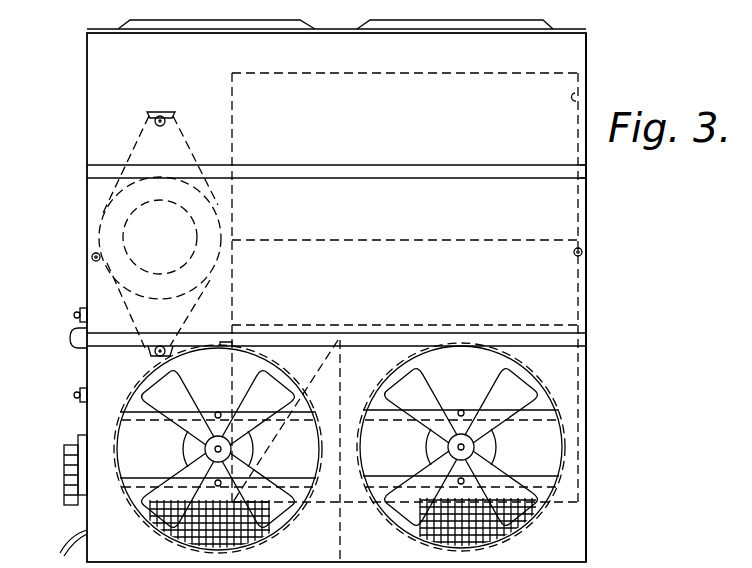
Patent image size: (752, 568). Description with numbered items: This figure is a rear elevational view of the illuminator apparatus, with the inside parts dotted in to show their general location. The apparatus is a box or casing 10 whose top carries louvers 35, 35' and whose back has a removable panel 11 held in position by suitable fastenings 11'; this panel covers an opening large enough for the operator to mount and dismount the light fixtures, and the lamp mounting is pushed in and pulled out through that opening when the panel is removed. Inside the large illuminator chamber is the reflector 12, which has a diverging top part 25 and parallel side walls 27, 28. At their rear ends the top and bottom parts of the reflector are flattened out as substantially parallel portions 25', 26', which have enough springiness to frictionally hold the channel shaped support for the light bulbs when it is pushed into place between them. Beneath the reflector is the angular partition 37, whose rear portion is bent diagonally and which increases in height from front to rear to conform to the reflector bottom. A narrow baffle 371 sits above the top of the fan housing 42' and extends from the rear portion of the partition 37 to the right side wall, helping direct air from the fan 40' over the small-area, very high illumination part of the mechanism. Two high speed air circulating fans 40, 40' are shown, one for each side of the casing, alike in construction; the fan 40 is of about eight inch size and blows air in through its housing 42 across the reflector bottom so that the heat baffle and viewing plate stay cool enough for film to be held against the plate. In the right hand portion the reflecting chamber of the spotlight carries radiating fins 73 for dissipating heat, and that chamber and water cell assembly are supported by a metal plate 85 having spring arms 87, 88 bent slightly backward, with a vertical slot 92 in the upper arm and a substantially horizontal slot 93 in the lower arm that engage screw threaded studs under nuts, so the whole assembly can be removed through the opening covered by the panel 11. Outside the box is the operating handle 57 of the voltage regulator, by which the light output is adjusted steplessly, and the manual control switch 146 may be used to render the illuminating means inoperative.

The box or casing 10 is at (84, 106).
The removable panel 11 is at (607, 297).
The fastenings 11' is at (341, 253).
The reflector 12 is at (586, 96).
The top part of reflector 25 is at (405, 91).
The flattened rear portion of reflector top 25' is at (405, 221).
The flattened rear portion of reflector bottom 26' is at (405, 395).
The side wall of reflector 27 is at (588, 188).
The side wall of reflector 28 is at (234, 211).
The louver 35 is at (488, 31).
The louver 35' is at (309, 33).
The angular partition 37 is at (343, 390).
The narrow baffle 371 is at (230, 344).
The air circulating fan 40 is at (517, 447).
The air circulating fan 40' is at (153, 449).
The fan housing 42 is at (503, 447).
The fan housing 42' is at (167, 449).
The operating handle 57 is at (64, 470).
The radiating fins 73 is at (110, 225).
The metal plate 85 is at (203, 210).
The spring arm 87 is at (178, 134).
The spring arm 88 is at (180, 314).
The slot 92 is at (159, 115).
The slot 93 is at (150, 351).
The manual control switch 146 is at (76, 393).